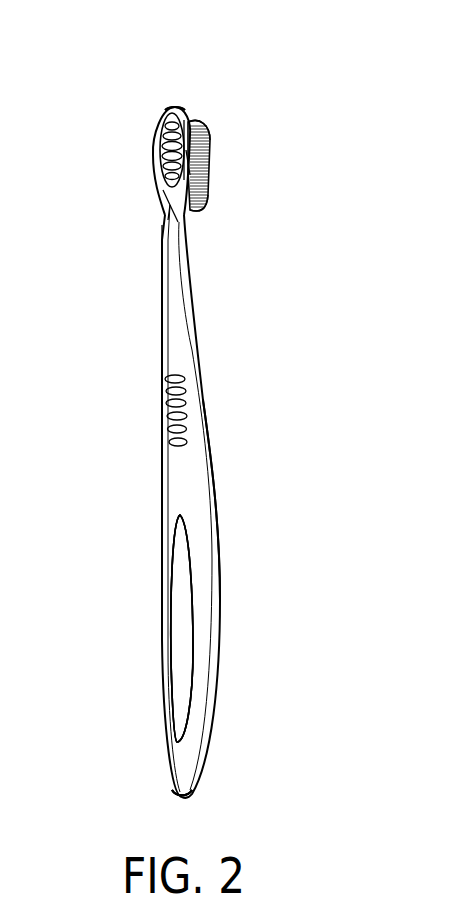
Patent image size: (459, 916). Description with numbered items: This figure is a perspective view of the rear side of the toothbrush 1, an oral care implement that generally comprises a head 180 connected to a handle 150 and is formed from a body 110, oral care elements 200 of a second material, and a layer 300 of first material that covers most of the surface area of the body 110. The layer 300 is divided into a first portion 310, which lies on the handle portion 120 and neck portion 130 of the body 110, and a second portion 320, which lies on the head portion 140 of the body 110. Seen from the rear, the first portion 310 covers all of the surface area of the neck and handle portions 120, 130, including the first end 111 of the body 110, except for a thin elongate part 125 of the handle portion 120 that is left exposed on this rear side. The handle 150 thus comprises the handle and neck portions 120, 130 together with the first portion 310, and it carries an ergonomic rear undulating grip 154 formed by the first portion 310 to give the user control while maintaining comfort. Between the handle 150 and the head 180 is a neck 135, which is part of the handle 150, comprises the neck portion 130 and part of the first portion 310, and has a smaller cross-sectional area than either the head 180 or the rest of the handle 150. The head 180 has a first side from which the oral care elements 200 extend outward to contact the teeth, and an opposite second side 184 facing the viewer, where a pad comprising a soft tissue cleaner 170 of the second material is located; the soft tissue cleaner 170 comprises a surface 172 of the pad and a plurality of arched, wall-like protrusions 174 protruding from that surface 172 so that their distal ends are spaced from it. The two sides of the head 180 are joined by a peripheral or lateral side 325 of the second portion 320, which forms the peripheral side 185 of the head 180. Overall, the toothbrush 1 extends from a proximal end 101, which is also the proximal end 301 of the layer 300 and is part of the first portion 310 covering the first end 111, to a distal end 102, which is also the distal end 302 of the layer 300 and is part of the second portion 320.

The toothbrush 1 is at (337, 239).
The head 180 is at (141, 111).
The soft tissue cleaner 170 is at (170, 153).
The second side 184 is at (148, 165).
The second portion 320 is at (163, 192).
The head portion 140 is at (160, 207).
The neck 135 is at (148, 265).
The layer of first material 300 is at (165, 327).
The neck portion 130 is at (177, 263).
The first portion 310 is at (167, 498).
The rear undulating grip 154 is at (167, 403).
The handle 150 is at (133, 465).
The body 110 is at (197, 377).
The handle portion 120 is at (182, 588).
The thin elongate part 125 is at (182, 657).
The first end 111 is at (177, 793).
The proximal end 101 is at (185, 796).
The proximal end of the layer 301 is at (185, 796).
The distal end 102 is at (175, 105).
The distal end of the layer 302 is at (175, 105).
The oral care elements 200 is at (213, 137).
The protrusions 174 is at (187, 127).
The surface of the pad 172 is at (180, 145).
The peripheral side of the second portion 325 is at (180, 163).
The peripheral side of the head 185 is at (200, 170).